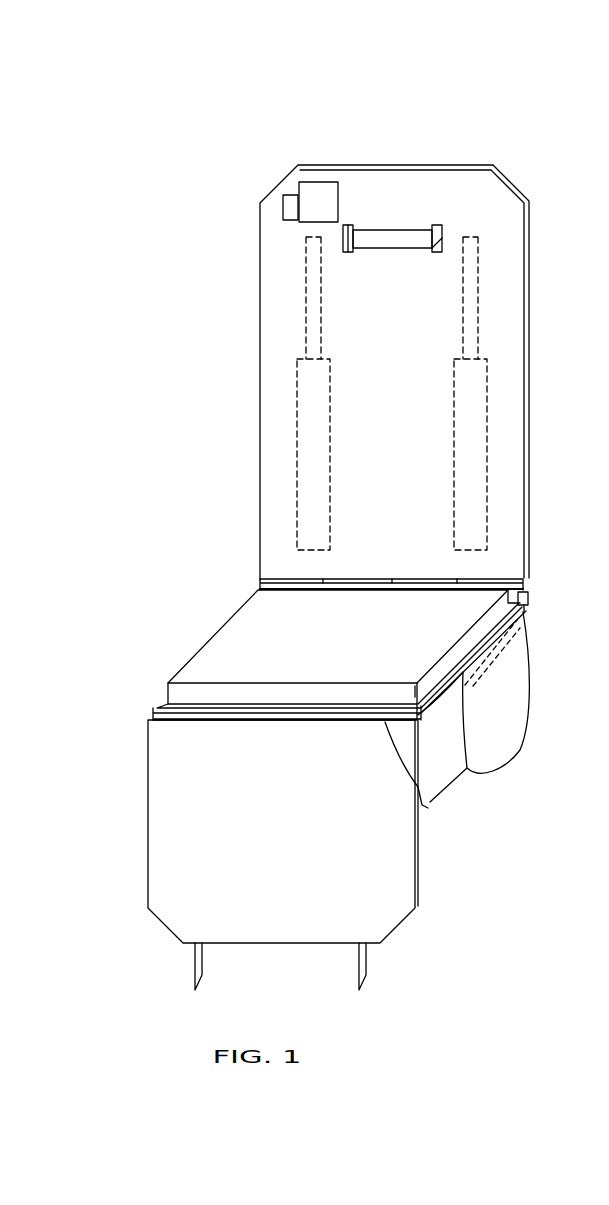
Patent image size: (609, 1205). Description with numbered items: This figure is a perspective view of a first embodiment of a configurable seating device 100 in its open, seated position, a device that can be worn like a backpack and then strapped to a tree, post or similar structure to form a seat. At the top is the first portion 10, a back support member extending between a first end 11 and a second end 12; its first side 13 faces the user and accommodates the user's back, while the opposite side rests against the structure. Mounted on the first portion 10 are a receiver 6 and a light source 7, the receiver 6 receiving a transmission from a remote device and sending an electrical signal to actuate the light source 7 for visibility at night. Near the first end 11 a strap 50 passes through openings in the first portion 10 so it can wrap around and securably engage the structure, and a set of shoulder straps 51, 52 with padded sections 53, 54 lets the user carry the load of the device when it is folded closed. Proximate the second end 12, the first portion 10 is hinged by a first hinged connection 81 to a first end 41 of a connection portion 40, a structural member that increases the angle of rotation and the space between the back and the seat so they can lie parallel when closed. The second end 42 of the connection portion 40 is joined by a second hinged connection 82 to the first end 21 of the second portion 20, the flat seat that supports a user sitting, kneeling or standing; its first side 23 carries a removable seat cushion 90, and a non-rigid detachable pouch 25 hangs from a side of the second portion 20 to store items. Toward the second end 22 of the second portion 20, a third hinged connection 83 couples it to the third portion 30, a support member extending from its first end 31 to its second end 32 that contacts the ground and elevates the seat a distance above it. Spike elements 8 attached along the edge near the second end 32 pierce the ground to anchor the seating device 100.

The seating device 100 is at (148, 78).
The first portion 10 is at (387, 188).
The first end 11 is at (238, 163).
The first side 13 is at (275, 232).
The receiver 6 is at (292, 203).
The light source 7 is at (320, 207).
The strap 50 is at (407, 236).
The shoulder strap 51 is at (472, 263).
The shoulder strap 52 is at (310, 305).
The padded section 53 is at (482, 522).
The padded section 54 is at (317, 438).
The second end 12 is at (228, 567).
The first hinged connection 81 is at (282, 580).
The first end 21 is at (228, 587).
The removable seat cushion 90 is at (260, 652).
The first side 23 is at (163, 703).
The second end 22 is at (115, 686).
The second portion 20 is at (197, 712).
The first end 41 is at (552, 572).
The connection portion 40 is at (522, 593).
The second hinged connection 82 is at (528, 605).
The second end 42 is at (543, 627).
The detachable pouch 25 is at (483, 700).
The third hinged connection 83 is at (418, 787).
The third portion 30 is at (383, 872).
The first end 31 is at (126, 723).
The second end 32 is at (130, 927).
The spike element 8 is at (195, 972).